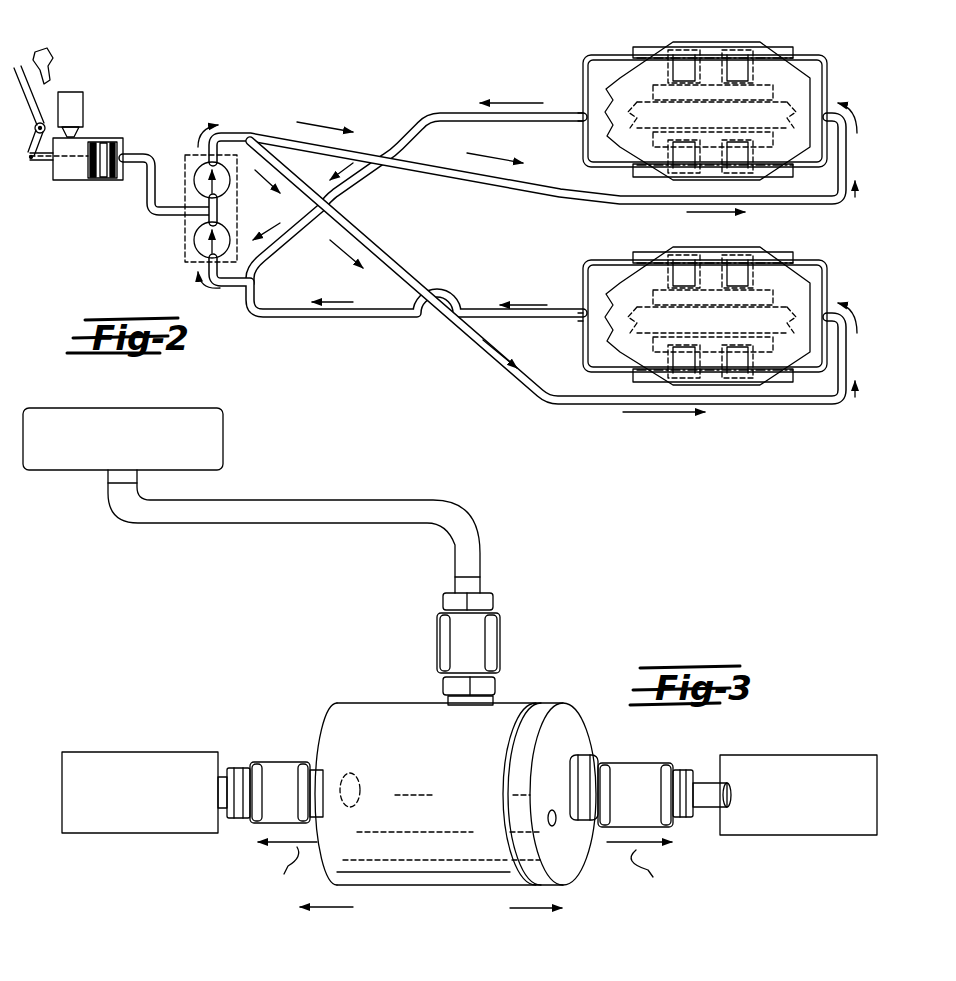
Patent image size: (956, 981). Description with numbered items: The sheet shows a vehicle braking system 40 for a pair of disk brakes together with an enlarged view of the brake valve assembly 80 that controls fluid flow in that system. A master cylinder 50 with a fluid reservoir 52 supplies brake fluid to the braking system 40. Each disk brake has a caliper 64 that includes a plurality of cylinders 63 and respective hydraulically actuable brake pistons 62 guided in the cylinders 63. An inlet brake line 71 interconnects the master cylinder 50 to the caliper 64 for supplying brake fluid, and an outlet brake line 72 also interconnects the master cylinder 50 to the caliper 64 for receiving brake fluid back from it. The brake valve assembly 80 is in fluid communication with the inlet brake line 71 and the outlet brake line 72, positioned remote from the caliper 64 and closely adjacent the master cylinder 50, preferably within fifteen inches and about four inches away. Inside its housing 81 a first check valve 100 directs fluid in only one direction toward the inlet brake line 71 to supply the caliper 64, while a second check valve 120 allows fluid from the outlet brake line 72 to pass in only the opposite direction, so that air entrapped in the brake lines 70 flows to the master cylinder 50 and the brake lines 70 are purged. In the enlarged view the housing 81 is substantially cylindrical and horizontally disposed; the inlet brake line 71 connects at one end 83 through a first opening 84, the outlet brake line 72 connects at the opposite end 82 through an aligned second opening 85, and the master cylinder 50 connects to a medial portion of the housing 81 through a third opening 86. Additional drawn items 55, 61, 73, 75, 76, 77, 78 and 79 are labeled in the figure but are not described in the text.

In FIG. 2, the braking system 40 is at (381, 100).
In FIG. 2, the master cylinder 50 is at (104, 130).
In FIG. 3, the master cylinder 50 is at (153, 405).
In FIG. 2, the fluid reservoir 52 is at (73, 92).
In FIG. 2, the brake pedal 55 is at (78, 40).
In FIG. 2, the caliper body 61 is at (606, 128).
In FIG. 2, the brake pistons 62 is at (717, 62).
In FIG. 2, the cylinders 63 is at (692, 44).
In FIG. 2, the caliper 64 is at (772, 65).
In FIG. 2, the brake lines 70 is at (418, 105).
In FIG. 2, the inlet brake line 71 is at (524, 189).
In FIG. 3, the inlet brake line 71 is at (694, 780).
In FIG. 2, the outlet brake line 72 is at (463, 112).
In FIG. 3, the outlet brake line 72 is at (214, 786).
In FIG. 2, the master cylinder brake line 73 is at (147, 180).
In FIG. 3, the master cylinder brake line 73 is at (307, 502).
In FIG. 3, the outlet fitting 75 is at (641, 804).
In FIG. 3, the inlet fitting 76 is at (273, 802).
In FIG. 3, the line fitting 77 is at (460, 627).
In FIG. 2, the caliper outlet port 78 is at (830, 88).
In FIG. 2, the caliper inlet port 79 is at (583, 96).
In FIG. 3, the brake valve assembly 80 is at (563, 635).
In FIG. 3, the housing 81 is at (393, 704).
In FIG. 3, the end 82 is at (322, 733).
In FIG. 3, the end 83 is at (571, 731).
In FIG. 3, the first opening 84 is at (578, 756).
In FIG. 3, the second opening 85 is at (318, 761).
In FIG. 3, the third opening 86 is at (478, 700).
In FIG. 2, the first check valve 100 is at (190, 176).
In FIG. 2, the second check valve 120 is at (190, 232).